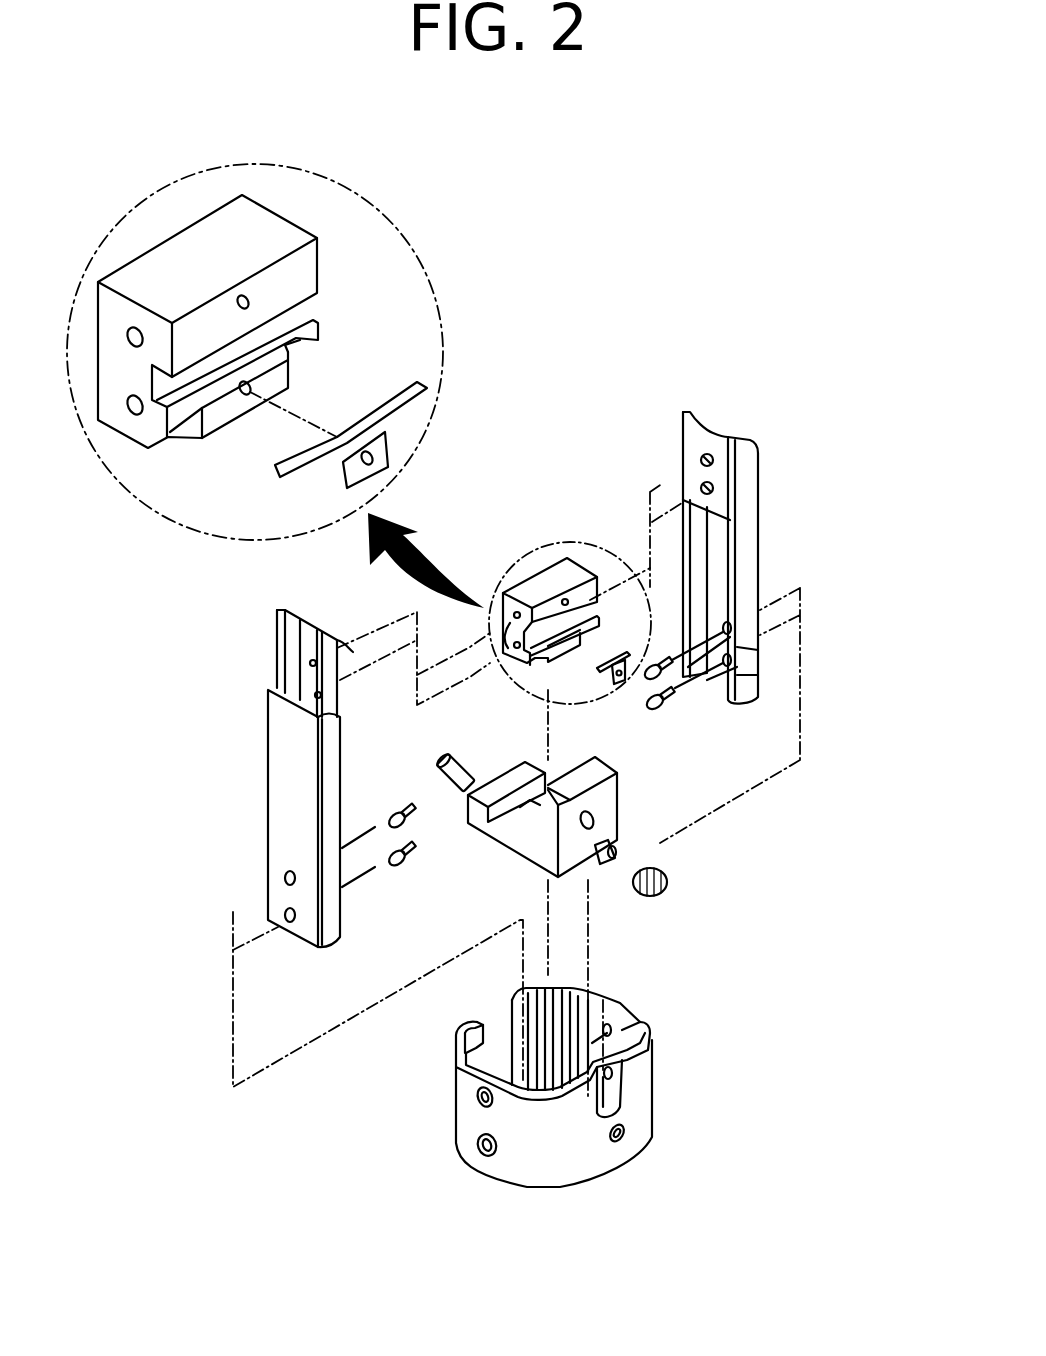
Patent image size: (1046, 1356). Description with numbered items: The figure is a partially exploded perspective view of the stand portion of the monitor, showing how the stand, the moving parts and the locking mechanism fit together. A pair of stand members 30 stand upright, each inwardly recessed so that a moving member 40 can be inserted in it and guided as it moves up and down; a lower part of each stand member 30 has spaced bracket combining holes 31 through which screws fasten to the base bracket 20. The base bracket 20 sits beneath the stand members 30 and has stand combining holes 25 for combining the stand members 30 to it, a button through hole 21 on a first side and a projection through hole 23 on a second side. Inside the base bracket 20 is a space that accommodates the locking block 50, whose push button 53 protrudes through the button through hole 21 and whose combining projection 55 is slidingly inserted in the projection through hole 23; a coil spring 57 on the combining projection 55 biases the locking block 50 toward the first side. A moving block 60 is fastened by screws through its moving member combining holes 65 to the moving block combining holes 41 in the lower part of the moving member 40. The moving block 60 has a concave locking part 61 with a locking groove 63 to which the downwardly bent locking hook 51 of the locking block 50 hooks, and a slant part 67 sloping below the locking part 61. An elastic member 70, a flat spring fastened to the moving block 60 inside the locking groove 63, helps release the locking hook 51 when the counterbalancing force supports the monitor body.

The base bracket 20 is at (591, 1084).
The button through hole 21 is at (510, 1030).
The projection through hole 23 is at (622, 1140).
The stand combining holes 25 is at (615, 1078).
The stand member 30 is at (278, 793).
The bracket combining holes 31 is at (285, 915).
The moving member 40 is at (277, 642).
The moving block combining holes 41 is at (315, 695).
The locking block 50 is at (607, 827).
The locking hook 51 is at (535, 795).
The push button 53 is at (463, 778).
The combining projection 55 is at (617, 857).
The coil spring 57 is at (667, 883).
The moving block 60 is at (564, 552).
The locking part 61 is at (212, 362).
The locking groove 63 is at (315, 322).
The moving member combining holes 65 is at (512, 625).
The slant part 67 is at (310, 352).
The elastic member 70 is at (388, 445).